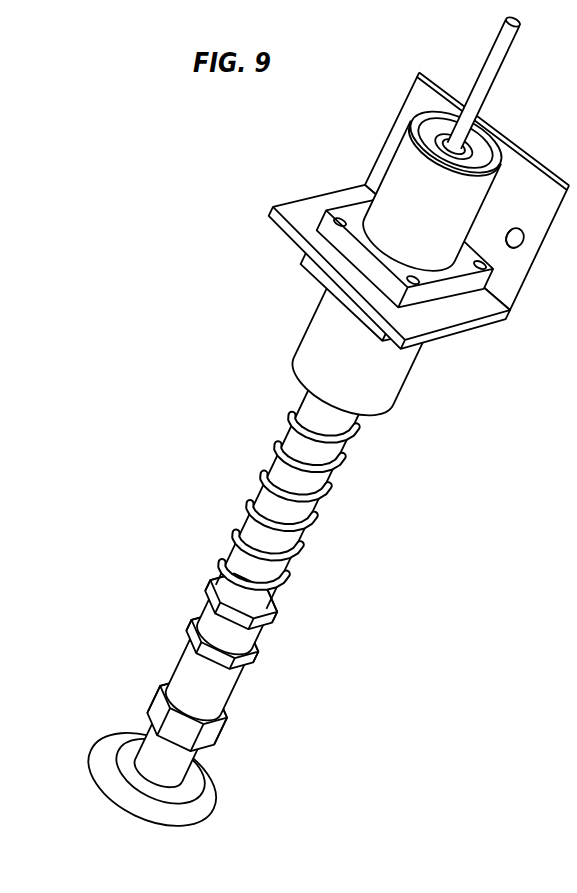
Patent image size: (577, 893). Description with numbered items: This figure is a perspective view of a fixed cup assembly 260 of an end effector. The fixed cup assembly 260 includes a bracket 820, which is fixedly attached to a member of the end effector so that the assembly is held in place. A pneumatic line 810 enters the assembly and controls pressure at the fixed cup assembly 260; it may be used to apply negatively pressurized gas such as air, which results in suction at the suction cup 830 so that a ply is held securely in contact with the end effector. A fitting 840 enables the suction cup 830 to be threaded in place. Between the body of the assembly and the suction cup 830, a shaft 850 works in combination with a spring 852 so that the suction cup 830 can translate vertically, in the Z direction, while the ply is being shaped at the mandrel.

The fixed cup assembly 260 is at (325, 429).
The pneumatic line 810 is at (490, 70).
The bracket 820 is at (397, 118).
The suction cup 830 is at (210, 793).
The fitting 840 is at (232, 672).
The shaft 850 is at (273, 562).
The spring 852 is at (315, 512).